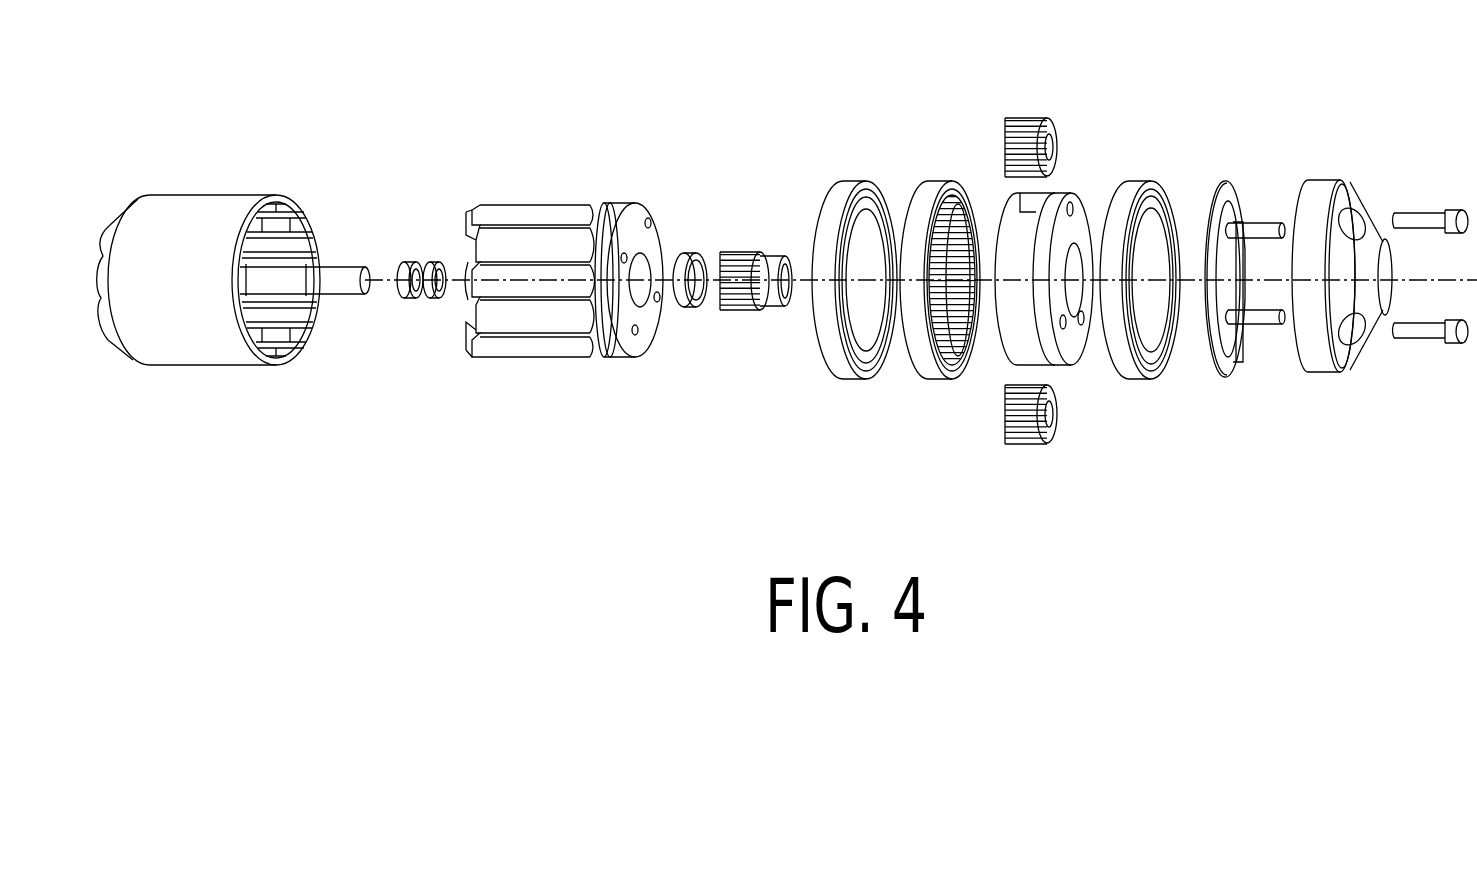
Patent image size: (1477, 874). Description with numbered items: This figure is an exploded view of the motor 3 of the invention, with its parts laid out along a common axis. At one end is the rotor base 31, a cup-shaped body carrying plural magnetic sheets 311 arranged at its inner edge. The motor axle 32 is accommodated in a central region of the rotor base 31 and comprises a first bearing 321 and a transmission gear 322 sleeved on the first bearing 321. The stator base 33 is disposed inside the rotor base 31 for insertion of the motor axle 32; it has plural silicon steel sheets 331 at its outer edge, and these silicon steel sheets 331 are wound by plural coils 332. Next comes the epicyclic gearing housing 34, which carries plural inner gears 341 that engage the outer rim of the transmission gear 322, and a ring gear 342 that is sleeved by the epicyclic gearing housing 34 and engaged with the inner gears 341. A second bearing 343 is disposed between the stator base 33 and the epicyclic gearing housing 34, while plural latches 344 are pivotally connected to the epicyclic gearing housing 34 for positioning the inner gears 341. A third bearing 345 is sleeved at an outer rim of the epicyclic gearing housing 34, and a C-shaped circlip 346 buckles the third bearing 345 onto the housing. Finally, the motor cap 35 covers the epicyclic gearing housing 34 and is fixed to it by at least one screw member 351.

The motor 3 is at (716, 163).
The rotor base 31 is at (215, 355).
The magnetic sheets 311 is at (293, 232).
The motor axle 32 is at (338, 283).
The stator base 33 is at (647, 347).
The silicon steel sheets 331 is at (533, 350).
The coils 332 is at (600, 355).
The first bearing 321 is at (684, 308).
The transmission gear 322 is at (760, 297).
The epicyclic gearing housing 34 is at (1075, 352).
The inner gears 341 is at (1032, 118).
The ring gear 342 is at (953, 367).
The second bearing 343 is at (843, 377).
The latches 344 is at (1262, 222).
The third bearing 345 is at (1133, 375).
The C-shaped circlip 346 is at (1217, 378).
The motor cap 35 is at (1350, 355).
The screw member 351 is at (1423, 212).